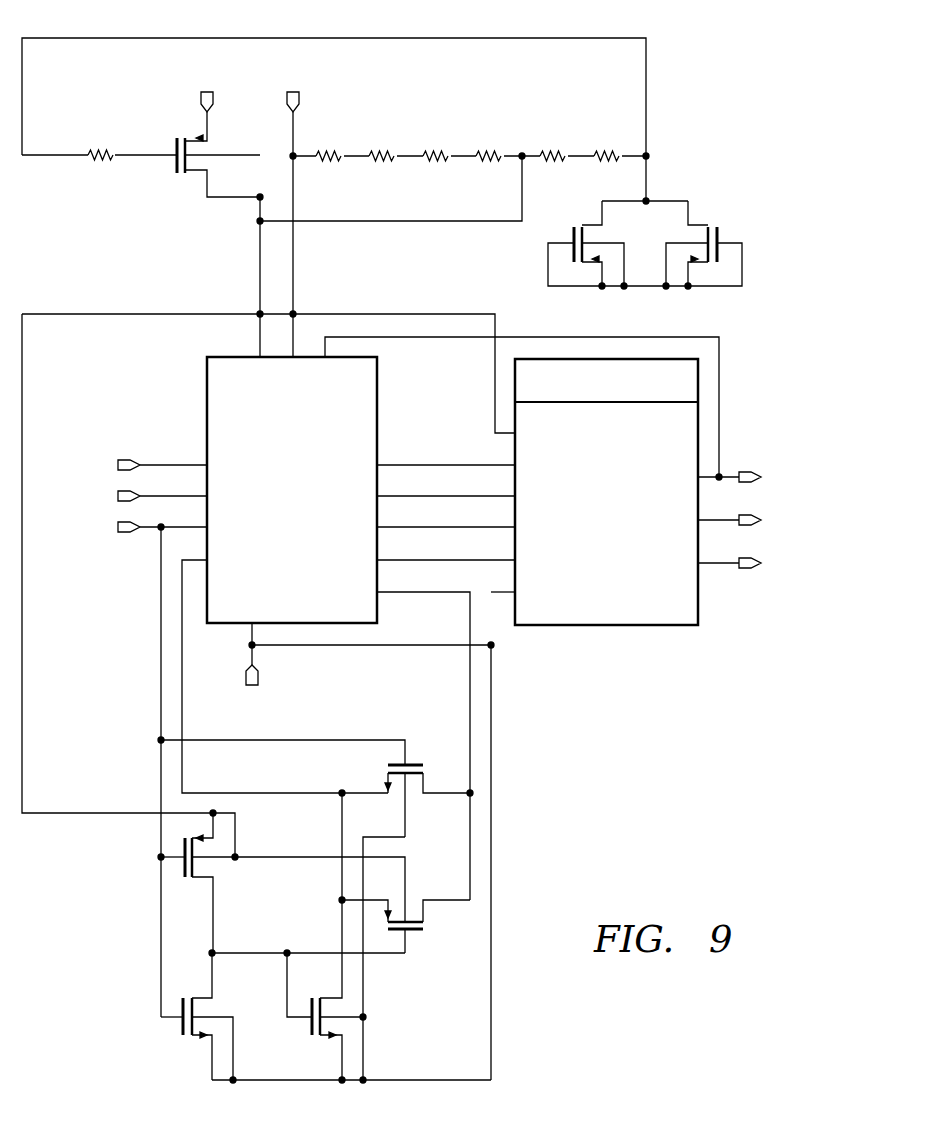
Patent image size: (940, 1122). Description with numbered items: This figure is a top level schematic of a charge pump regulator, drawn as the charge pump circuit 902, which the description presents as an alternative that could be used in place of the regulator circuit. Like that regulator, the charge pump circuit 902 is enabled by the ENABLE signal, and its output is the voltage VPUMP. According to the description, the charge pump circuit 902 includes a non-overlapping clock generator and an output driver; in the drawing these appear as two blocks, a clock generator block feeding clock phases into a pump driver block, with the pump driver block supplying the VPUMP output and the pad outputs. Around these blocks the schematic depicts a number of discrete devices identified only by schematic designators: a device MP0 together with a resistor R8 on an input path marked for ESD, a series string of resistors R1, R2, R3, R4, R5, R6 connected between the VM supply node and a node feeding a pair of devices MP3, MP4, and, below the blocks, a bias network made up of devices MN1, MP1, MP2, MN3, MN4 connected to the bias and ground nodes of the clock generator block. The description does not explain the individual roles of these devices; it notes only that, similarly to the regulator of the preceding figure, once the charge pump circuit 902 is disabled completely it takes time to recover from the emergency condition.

The charge pump circuit 902 is at (448, 560).
The ESD PMOS transistor MP0 is at (218, 154).
The ESD resistor R8 is at (100, 168).
The divider resistor R1 is at (329, 145).
The divider resistor R2 is at (382, 145).
The divider resistor R3 is at (436, 145).
The divider resistor R4 is at (489, 145).
The divider resistor R5 is at (553, 145).
The divider resistor R6 is at (607, 145).
The PMOS transistor MP3 is at (586, 243).
The PMOS transistor MP4 is at (704, 243).
The NMOS bias transistor MN1 is at (427, 801).
The PMOS transistor MP1 is at (208, 883).
The PMOS transistor MP2 is at (406, 915).
The NMOS transistor MN3 is at (209, 1016).
The NMOS transistor MN4 is at (328, 1039).